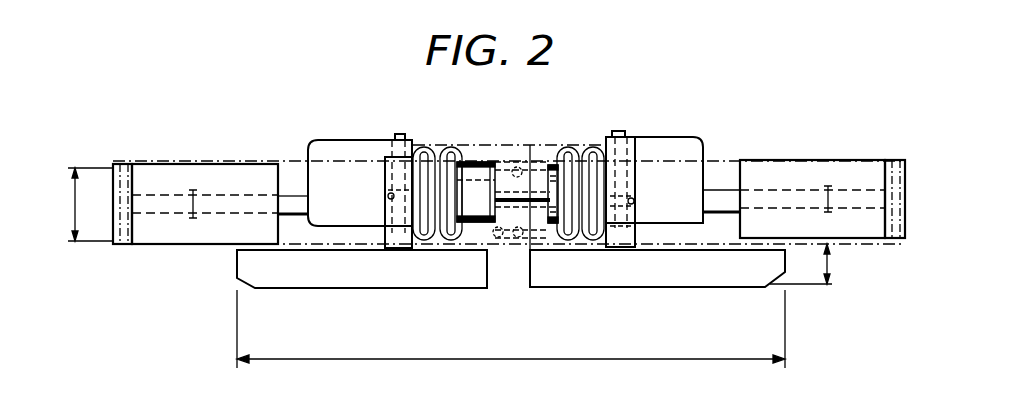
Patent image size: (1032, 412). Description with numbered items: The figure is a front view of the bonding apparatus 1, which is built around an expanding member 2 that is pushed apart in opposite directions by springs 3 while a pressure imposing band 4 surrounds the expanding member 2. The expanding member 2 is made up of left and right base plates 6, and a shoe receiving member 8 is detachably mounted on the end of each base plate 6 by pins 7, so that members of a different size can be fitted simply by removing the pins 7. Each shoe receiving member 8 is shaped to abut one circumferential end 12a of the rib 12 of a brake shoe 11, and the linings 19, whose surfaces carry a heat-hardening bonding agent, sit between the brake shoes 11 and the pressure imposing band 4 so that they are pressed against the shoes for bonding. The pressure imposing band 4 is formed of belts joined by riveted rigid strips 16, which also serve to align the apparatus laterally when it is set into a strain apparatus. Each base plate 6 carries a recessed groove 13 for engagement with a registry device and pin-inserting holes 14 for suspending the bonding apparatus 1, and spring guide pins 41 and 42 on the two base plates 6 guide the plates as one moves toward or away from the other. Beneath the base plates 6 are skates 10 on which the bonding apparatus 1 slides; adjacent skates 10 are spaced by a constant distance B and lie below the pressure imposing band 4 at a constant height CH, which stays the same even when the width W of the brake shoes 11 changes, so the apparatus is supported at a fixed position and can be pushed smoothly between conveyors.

The bonding apparatus 1 is at (867, 155).
The expanding member 2 is at (655, 137).
The spring 3 is at (575, 147).
The pressure imposing band 4 is at (828, 155).
The base plate 6 is at (390, 196).
The pin 7 is at (401, 134).
The shoe receiving member 8 is at (326, 146).
The skate 10 is at (285, 276).
The brake shoe 11 is at (126, 172).
The rib 12 is at (172, 195).
The circumferential end of rib 12a is at (298, 200).
The recessed groove 13 is at (394, 249).
The pin-inserting hole 14 is at (388, 190).
The rigid strip 16 is at (517, 240).
The lining 19 is at (126, 240).
The spring guide pin 41 is at (482, 242).
The spring guide pin 42 is at (554, 226).
The width of brake shoe W is at (70, 172).
The distance between adjacent skates B is at (511, 329).
The height of skate CH is at (830, 270).